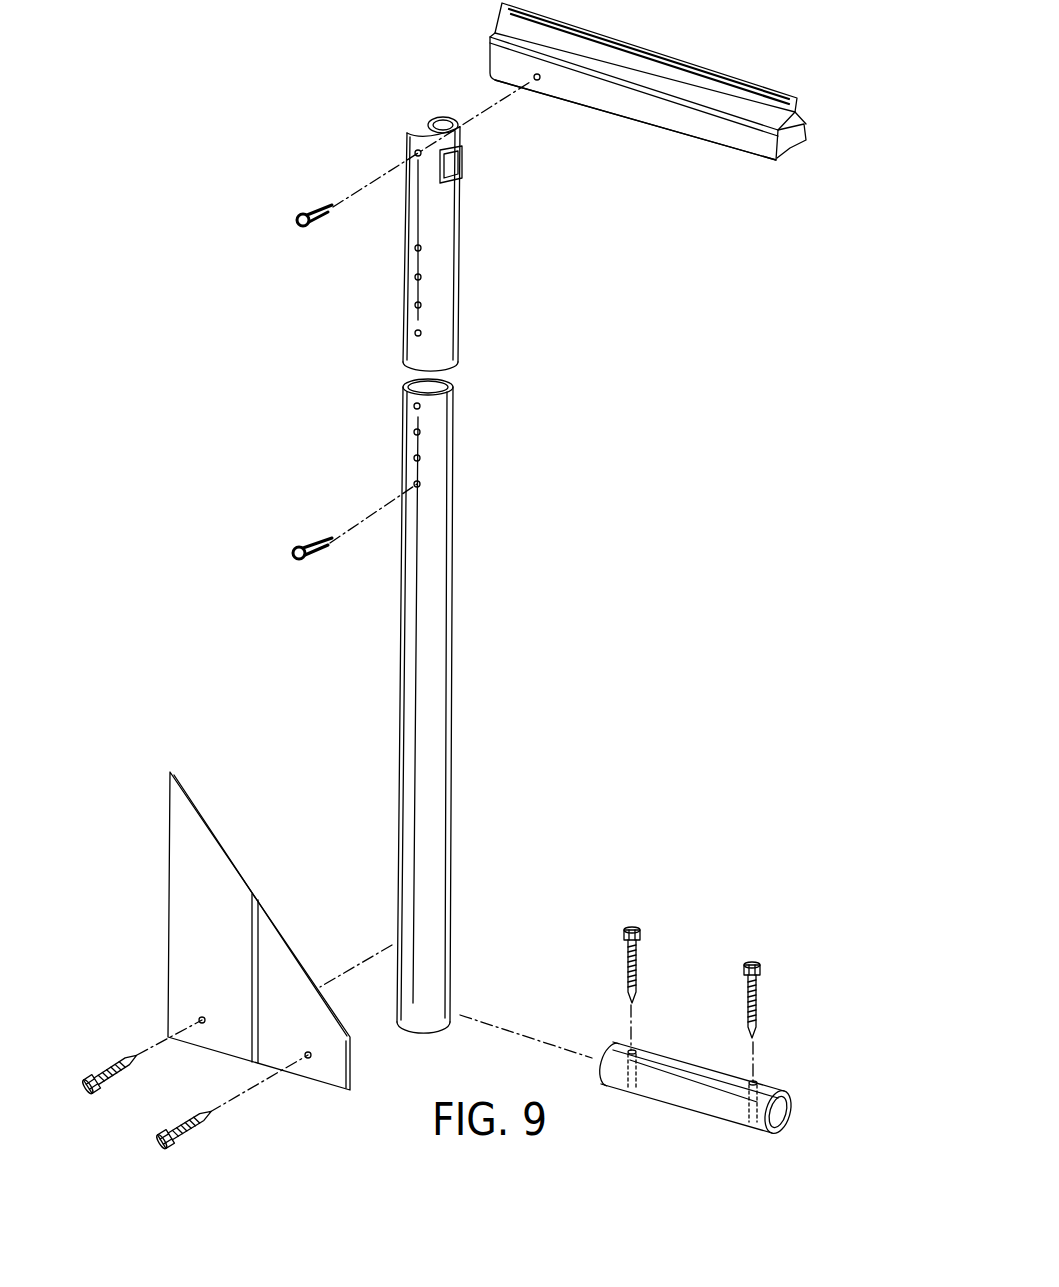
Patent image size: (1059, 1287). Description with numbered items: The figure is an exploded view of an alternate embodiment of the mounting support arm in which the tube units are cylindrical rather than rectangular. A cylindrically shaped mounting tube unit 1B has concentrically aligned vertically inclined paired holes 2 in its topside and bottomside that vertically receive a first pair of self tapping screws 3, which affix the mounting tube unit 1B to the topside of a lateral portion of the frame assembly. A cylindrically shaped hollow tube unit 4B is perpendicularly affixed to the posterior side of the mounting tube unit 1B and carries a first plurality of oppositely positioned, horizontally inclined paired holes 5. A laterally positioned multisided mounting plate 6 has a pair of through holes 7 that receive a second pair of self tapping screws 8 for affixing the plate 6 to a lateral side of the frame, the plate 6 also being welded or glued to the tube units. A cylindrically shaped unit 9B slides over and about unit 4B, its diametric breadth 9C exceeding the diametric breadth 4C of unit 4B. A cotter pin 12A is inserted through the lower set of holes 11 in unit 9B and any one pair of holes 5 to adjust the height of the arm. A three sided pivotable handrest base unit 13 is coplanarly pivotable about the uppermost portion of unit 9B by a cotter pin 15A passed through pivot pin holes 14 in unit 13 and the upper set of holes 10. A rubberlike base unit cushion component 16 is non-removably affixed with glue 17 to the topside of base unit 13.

The cylindrically shaped mounting tube unit 1B is at (670, 1092).
The concentrically aligned vertically inclined paired holes 2 is at (634, 1050).
The first pair of self tapping screws 3 is at (636, 963).
The cylindrically shaped hollow tube unit 4B is at (440, 720).
The diametric breadth of unit 4B 4C is at (425, 386).
The first plurality of concentrically aligned horizontally inclined paired holes 5 is at (414, 407).
The multisided mounting plate 6 is at (183, 880).
The horizontally inclined pair of through holes 7 is at (202, 1017).
The second pair of self tapping screws 8 is at (123, 1073).
The cylindrically shaped unit 9B is at (447, 258).
The diametric breadth of unit 9B 9C is at (438, 126).
The upper set of concentrically aligned horizontally inclined holes 10 is at (411, 153).
The lower set of concentrically aligned horizontally inclined holes 11 is at (414, 249).
The cotter pin 12A is at (305, 558).
The three sided pivotable handrest base unit 13 is at (679, 122).
The pivot pin holes 14 is at (536, 81).
The cotter pin 15A is at (318, 210).
The base unit cushion component 16 is at (704, 72).
The glue 17 is at (792, 150).